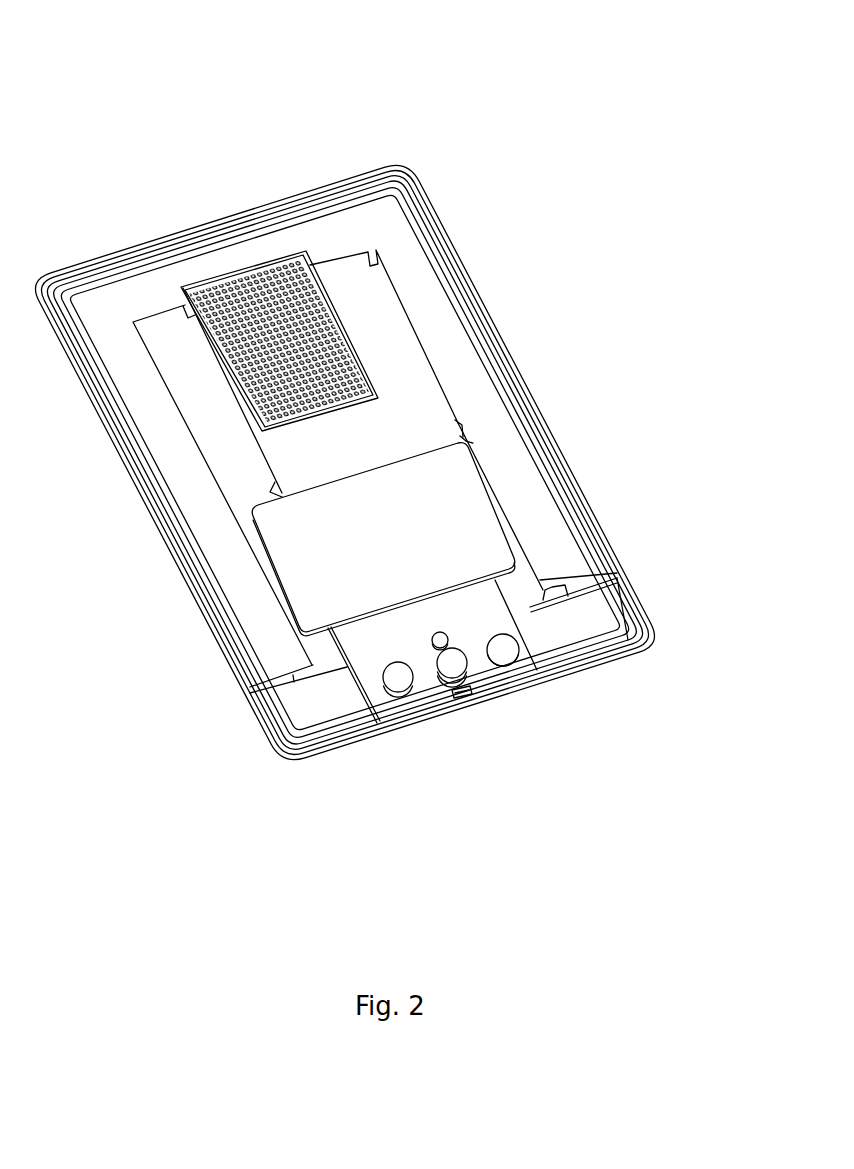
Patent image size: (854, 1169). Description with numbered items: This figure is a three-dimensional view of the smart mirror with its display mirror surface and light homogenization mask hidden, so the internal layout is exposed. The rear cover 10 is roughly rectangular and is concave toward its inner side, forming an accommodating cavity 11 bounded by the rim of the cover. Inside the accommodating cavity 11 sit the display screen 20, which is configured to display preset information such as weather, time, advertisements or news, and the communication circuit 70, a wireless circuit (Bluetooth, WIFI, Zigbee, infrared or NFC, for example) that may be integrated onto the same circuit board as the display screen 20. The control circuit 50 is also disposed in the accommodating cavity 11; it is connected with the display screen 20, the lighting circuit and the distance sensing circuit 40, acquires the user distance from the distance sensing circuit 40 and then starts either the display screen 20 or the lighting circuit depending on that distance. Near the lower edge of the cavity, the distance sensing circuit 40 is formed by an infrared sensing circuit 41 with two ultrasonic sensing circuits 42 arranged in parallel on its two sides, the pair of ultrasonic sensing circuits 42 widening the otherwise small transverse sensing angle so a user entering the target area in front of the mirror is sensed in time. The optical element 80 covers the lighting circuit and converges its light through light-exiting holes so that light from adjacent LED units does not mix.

The rear cover 10 is at (510, 350).
The accommodating cavity 11 is at (165, 337).
The display screen 20 is at (253, 267).
The distance sensing circuit 40 is at (478, 774).
The infrared sensing circuit 41 is at (452, 779).
The ultrasonic sensing circuit 42 is at (403, 677).
The control circuit 50 is at (423, 520).
The communication circuit 70 is at (350, 300).
The optical element 80 is at (540, 507).